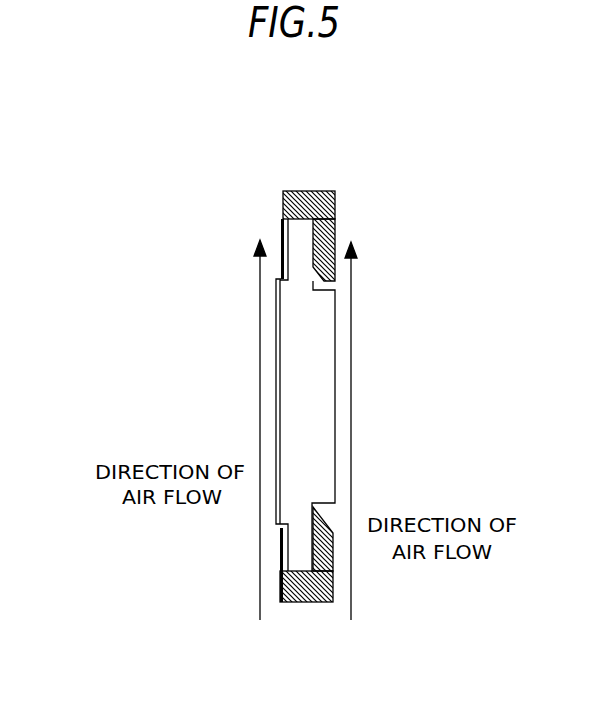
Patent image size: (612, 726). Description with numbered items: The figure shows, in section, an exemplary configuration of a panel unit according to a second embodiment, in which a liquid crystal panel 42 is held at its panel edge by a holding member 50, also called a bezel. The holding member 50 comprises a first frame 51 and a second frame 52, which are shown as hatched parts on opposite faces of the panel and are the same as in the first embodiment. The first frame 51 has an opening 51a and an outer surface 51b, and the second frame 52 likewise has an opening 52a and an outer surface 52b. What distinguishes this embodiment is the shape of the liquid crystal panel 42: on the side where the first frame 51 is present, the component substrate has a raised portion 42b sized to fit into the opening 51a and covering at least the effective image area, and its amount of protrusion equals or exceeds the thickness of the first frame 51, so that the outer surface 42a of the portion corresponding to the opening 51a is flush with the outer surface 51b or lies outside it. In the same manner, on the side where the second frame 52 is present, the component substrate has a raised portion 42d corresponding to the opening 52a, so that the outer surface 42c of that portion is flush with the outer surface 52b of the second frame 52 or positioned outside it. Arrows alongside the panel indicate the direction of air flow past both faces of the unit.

The liquid crystal panel 42 is at (255, 376).
The outer surface 42a is at (340, 398).
The raised portion 42b is at (328, 430).
The outer surface 42c is at (273, 363).
The raised portion 42d is at (288, 443).
The holding member 50 is at (292, 339).
The first frame 51 is at (308, 190).
The opening 51a is at (330, 280).
The outer surface 51b is at (337, 226).
The second frame 52 is at (278, 217).
The opening 52a is at (273, 315).
The outer surface 52b is at (278, 242).